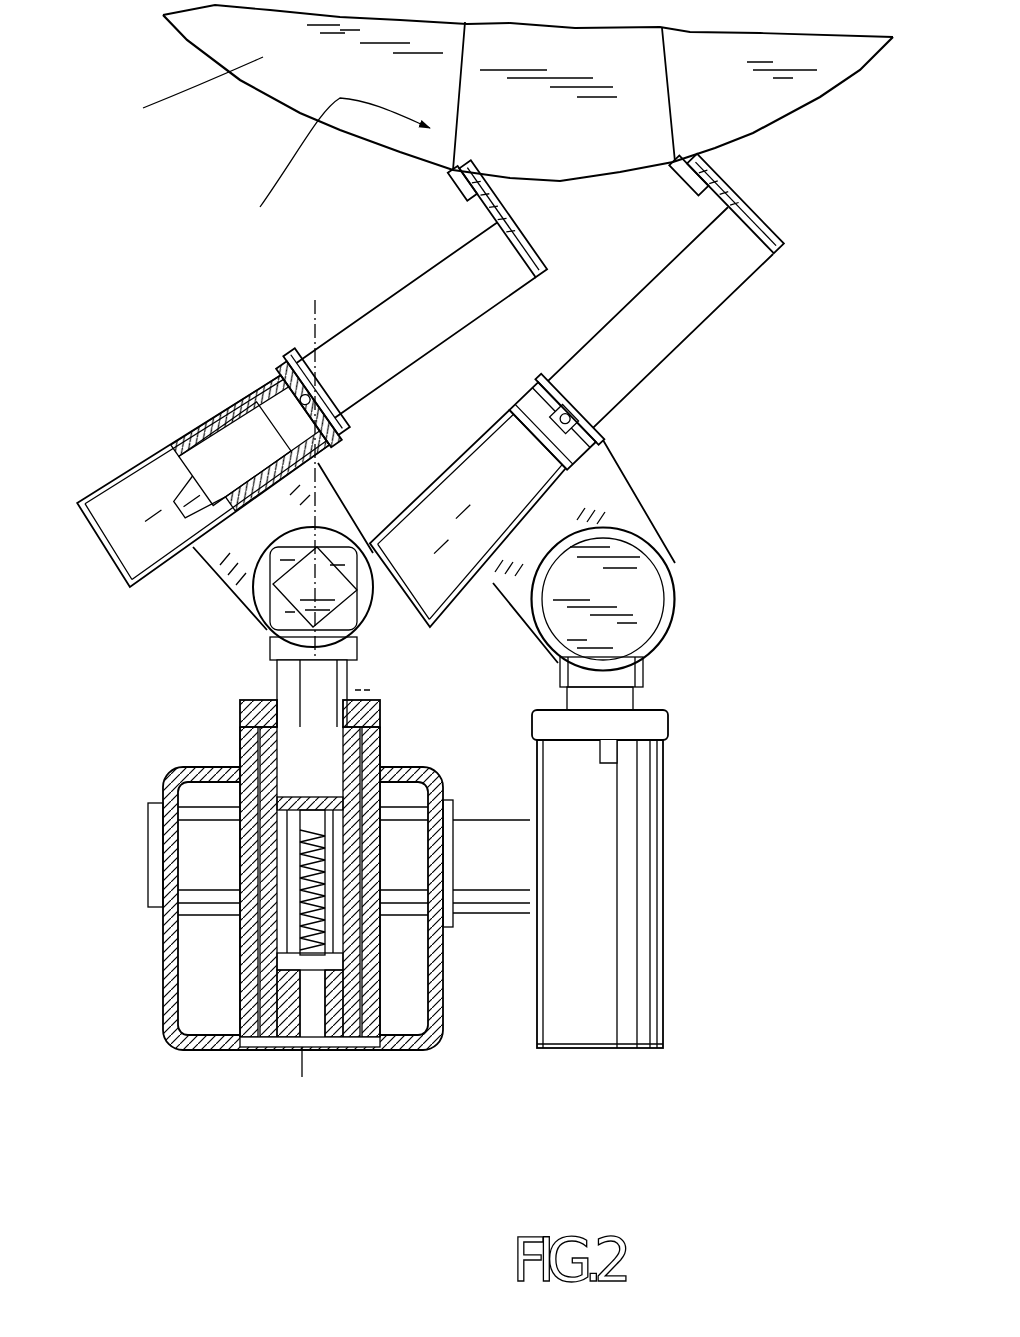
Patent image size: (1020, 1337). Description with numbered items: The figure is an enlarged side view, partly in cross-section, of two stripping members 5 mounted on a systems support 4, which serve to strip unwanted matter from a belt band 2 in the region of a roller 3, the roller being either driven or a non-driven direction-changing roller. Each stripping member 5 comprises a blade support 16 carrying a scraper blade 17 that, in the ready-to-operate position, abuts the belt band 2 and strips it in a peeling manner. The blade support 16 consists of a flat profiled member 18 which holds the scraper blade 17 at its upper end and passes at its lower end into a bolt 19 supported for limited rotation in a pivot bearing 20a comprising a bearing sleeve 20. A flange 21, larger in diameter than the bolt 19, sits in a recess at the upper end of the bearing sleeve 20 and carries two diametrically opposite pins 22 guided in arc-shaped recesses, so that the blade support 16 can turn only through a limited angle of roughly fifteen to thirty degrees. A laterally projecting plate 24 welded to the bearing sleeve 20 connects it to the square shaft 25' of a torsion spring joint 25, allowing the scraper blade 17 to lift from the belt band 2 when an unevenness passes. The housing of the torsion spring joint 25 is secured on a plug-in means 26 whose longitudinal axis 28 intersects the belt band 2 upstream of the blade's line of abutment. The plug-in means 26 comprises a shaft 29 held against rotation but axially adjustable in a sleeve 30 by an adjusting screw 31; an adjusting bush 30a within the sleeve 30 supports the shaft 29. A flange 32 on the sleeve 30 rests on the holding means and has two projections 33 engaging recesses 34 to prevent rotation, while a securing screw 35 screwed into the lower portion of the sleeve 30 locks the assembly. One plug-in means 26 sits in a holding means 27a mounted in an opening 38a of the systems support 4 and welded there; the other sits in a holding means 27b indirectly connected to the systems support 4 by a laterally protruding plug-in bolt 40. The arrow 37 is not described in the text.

The belt band 2 is at (186, 40).
The roller 3 is at (194, 91).
The systems support 4 is at (192, 1038).
The stripping member 5 is at (220, 307).
The blade support 16 is at (368, 302).
The scraper blade 17 is at (527, 247).
The flat profiled member 18 is at (427, 300).
The bolt 19 is at (233, 457).
The bearing sleeve 20 is at (147, 480).
The pivot bearing 20a is at (183, 417).
The flange 21 is at (262, 362).
The pins 22 is at (300, 380).
The laterally projecting plate 24 is at (213, 605).
The torsion spring joint 25 is at (362, 601).
The shaft of the torsion spring joint 25' is at (198, 706).
The plug-in means 26 is at (363, 690).
The holding means 27a is at (232, 967).
The holding means 27b is at (668, 1000).
The longitudinal axis 28 is at (315, 327).
The shaft 29 is at (240, 710).
The sleeve 30 is at (265, 913).
The adjusting bush 30a is at (270, 877).
The adjusting screw 31 is at (298, 1040).
The flange 32 is at (242, 728).
The projections 33 is at (257, 778).
The recesses 34 is at (617, 763).
The securing screw 35 is at (257, 1042).
The direction of rotation 37 is at (331, 171).
The opening 38a is at (368, 1038).
The plug-in bolt 40 is at (483, 922).